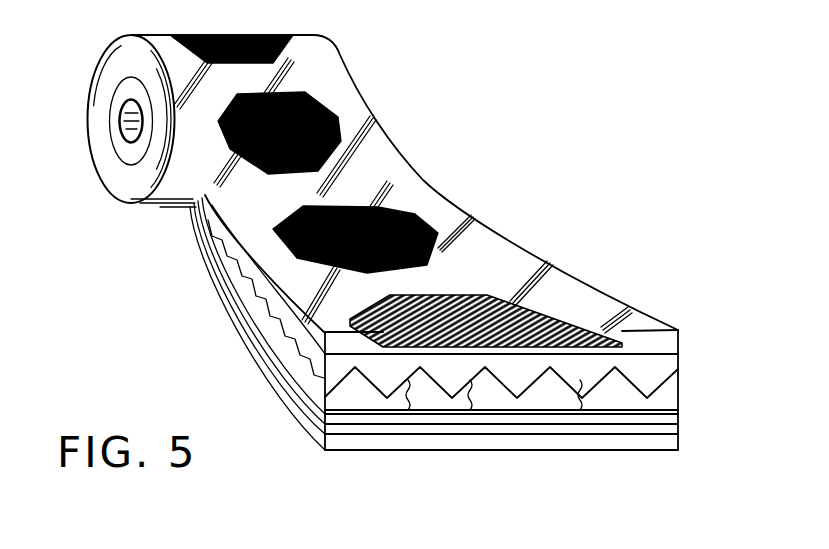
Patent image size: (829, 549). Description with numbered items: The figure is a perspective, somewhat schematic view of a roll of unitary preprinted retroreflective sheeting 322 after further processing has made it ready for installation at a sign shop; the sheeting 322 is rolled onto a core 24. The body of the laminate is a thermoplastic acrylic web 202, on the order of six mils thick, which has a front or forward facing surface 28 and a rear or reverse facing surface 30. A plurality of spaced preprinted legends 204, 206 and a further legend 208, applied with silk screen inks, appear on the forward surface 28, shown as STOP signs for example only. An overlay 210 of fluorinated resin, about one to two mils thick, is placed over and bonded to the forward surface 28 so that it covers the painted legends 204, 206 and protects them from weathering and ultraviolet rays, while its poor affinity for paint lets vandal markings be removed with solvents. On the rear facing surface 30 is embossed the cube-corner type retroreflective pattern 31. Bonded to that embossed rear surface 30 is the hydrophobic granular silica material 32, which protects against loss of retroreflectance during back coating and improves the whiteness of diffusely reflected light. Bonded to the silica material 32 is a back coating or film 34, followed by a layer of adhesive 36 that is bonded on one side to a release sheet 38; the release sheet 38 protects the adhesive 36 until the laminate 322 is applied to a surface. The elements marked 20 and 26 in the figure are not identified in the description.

The indicia (STOP sign image) 20 is at (507, 303).
The core 24 is at (122, 118).
The adhesive layer 26 is at (558, 368).
The front or forward facing surface 28 is at (651, 347).
The rear or reverse facing surface 30 is at (665, 383).
The cube-corner type retroreflective pattern 31 is at (373, 390).
The hydrophobic granular silica material 32 is at (612, 390).
The back coating or film 34 is at (678, 414).
The layer of adhesive 36 is at (672, 428).
The release sheet 38 is at (643, 440).
The thermoplastic web 202 is at (333, 373).
The preprinted legend 204 is at (278, 35).
The preprinted legend 206 is at (307, 97).
The third label 208 is at (423, 180).
The overlay 210 is at (278, 302).
The roll of unitary preprinted retroreflective sheeting 322 is at (520, 193).